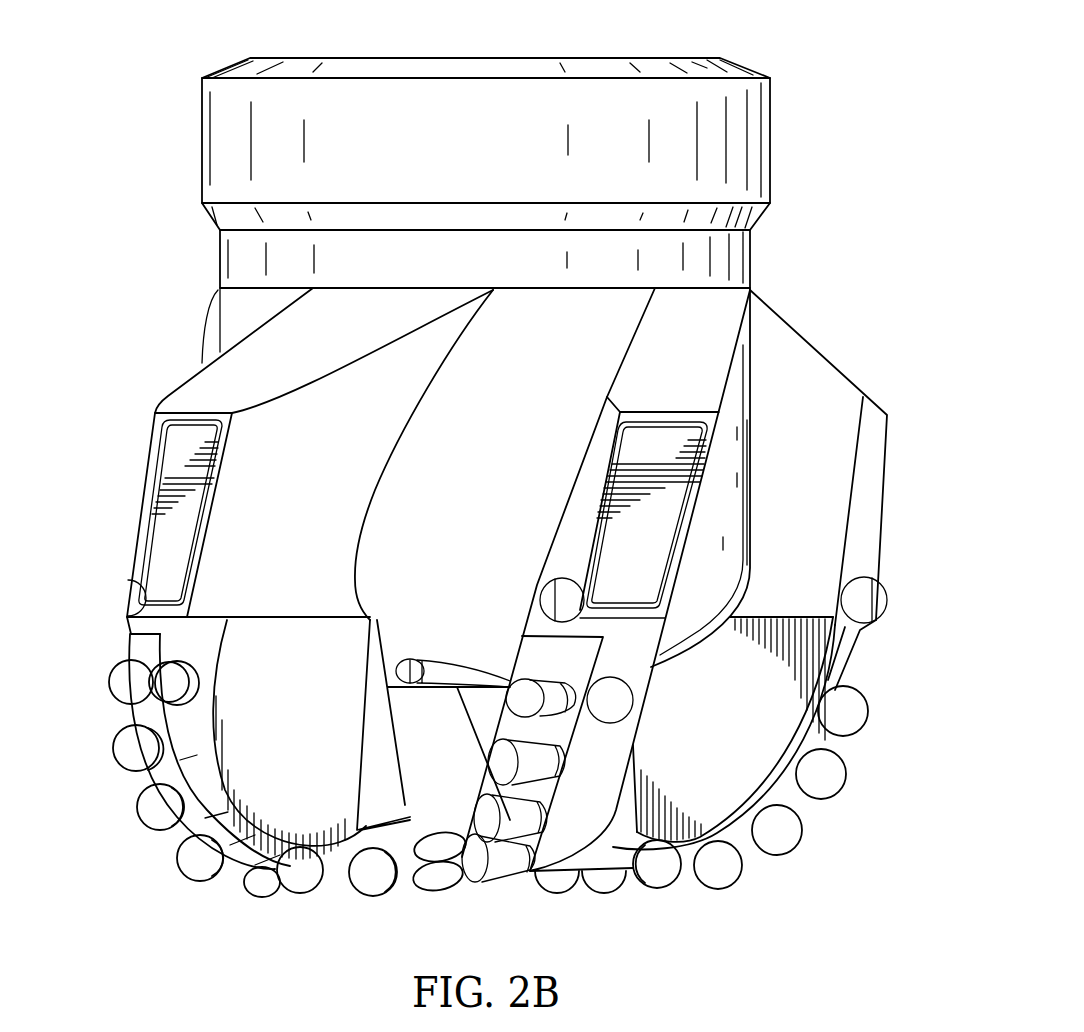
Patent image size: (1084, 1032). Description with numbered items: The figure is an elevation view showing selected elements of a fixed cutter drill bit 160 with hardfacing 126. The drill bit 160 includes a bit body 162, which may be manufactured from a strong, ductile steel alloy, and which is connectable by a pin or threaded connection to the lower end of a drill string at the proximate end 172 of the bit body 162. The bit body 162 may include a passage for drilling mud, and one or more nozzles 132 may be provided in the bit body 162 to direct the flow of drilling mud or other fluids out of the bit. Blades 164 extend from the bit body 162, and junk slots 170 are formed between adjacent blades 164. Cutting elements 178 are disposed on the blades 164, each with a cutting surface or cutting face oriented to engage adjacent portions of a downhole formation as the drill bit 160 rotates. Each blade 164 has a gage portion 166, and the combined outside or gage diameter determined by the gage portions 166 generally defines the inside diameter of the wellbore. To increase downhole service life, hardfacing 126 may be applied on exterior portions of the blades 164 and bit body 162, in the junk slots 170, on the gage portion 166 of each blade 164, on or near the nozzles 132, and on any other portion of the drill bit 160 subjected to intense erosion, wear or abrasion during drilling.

The fixed cutter drill bit 160 is at (876, 215).
The proximate end 172 is at (745, 70).
The blade 164 is at (179, 383).
The gage portion 166 is at (150, 443).
The junk slot 170 is at (393, 492).
The bit body 162 is at (550, 387).
The nozzle 132 is at (383, 713).
The hardfacing 126 is at (160, 548).
The cutting element 178 is at (868, 728).